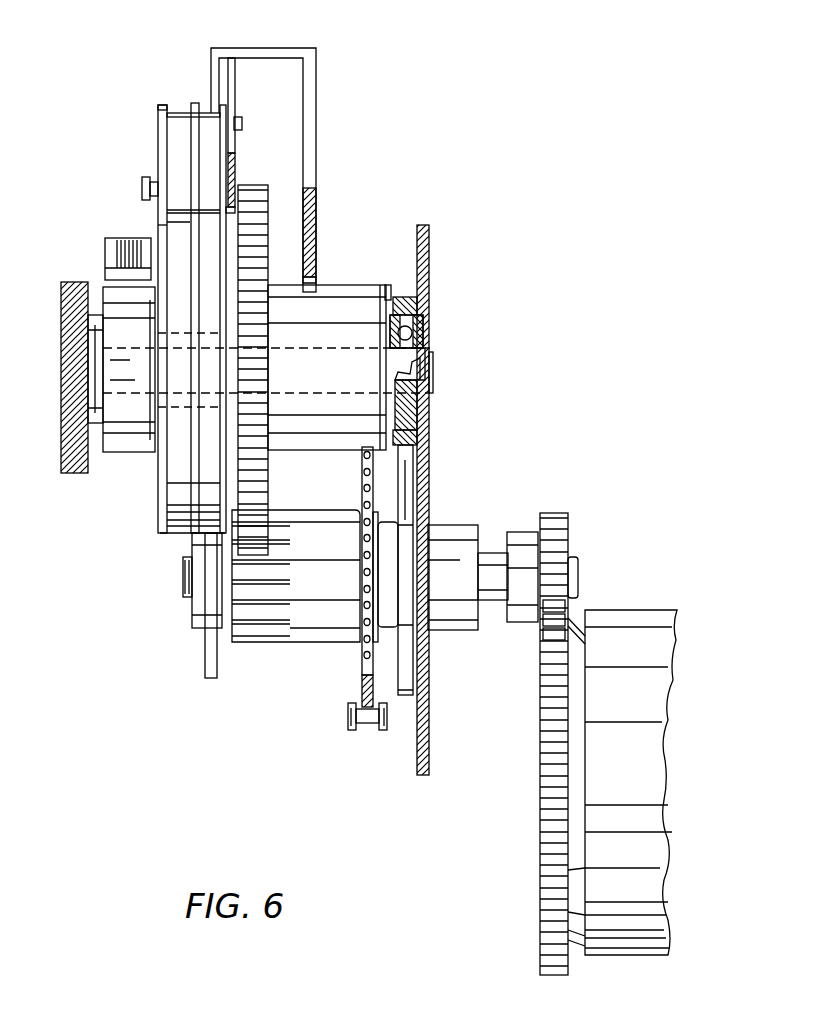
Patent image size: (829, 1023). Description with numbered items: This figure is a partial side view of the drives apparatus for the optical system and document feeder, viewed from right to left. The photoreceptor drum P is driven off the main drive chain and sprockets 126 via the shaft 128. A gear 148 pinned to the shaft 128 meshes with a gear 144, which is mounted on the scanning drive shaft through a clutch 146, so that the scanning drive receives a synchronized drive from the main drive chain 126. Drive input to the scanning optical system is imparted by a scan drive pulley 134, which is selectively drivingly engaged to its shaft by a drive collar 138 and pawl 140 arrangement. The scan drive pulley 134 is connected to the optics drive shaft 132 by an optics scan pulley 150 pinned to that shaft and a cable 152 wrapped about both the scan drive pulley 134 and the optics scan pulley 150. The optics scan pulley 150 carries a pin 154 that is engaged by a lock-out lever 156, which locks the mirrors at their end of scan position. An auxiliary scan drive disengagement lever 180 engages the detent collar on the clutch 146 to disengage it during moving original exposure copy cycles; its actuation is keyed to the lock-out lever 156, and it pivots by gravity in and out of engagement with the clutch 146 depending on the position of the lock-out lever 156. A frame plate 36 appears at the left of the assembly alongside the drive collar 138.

The auxiliary scan drive disengagement lever 180 is at (313, 48).
The optics scan pulley 150 is at (160, 137).
The cable 152 is at (195, 104).
The lock-out lever 156 is at (236, 75).
The pin 154 is at (243, 120).
The gear 144 is at (262, 190).
The optics drive shaft 132 is at (141, 188).
The scan drive pulley 134 is at (158, 228).
The pawl 140 is at (107, 258).
The frame plate 36 is at (61, 385).
The drive collar 138 is at (125, 453).
The clutch 146 is at (357, 300).
The shaft 128 is at (183, 575).
The gear 148 is at (275, 645).
The main drive chain and sprockets 126 is at (355, 784).
The photoreceptor drum P is at (637, 610).